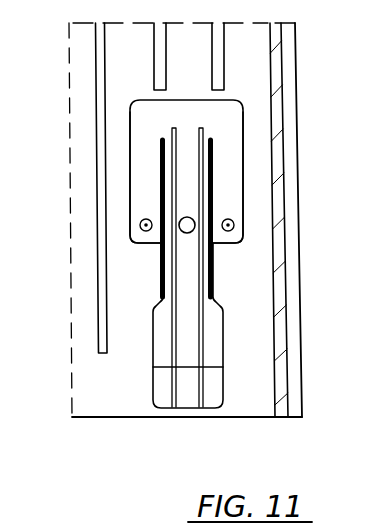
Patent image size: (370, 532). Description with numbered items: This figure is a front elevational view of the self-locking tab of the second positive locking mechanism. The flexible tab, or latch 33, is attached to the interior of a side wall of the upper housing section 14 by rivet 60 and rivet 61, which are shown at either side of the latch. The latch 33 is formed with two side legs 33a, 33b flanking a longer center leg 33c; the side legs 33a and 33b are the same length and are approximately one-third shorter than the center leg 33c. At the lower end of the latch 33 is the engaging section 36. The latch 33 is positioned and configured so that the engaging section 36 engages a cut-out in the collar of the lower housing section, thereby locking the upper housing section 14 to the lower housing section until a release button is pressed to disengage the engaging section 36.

The upper housing section 14 is at (287, 333).
The flexible tab 33 is at (186, 281).
The side leg 33a is at (145, 190).
The side leg 33b is at (230, 206).
The center leg 33c is at (187, 158).
The engaging section 36 is at (188, 397).
The rivet 60 is at (140, 227).
The rivet 61 is at (236, 227).